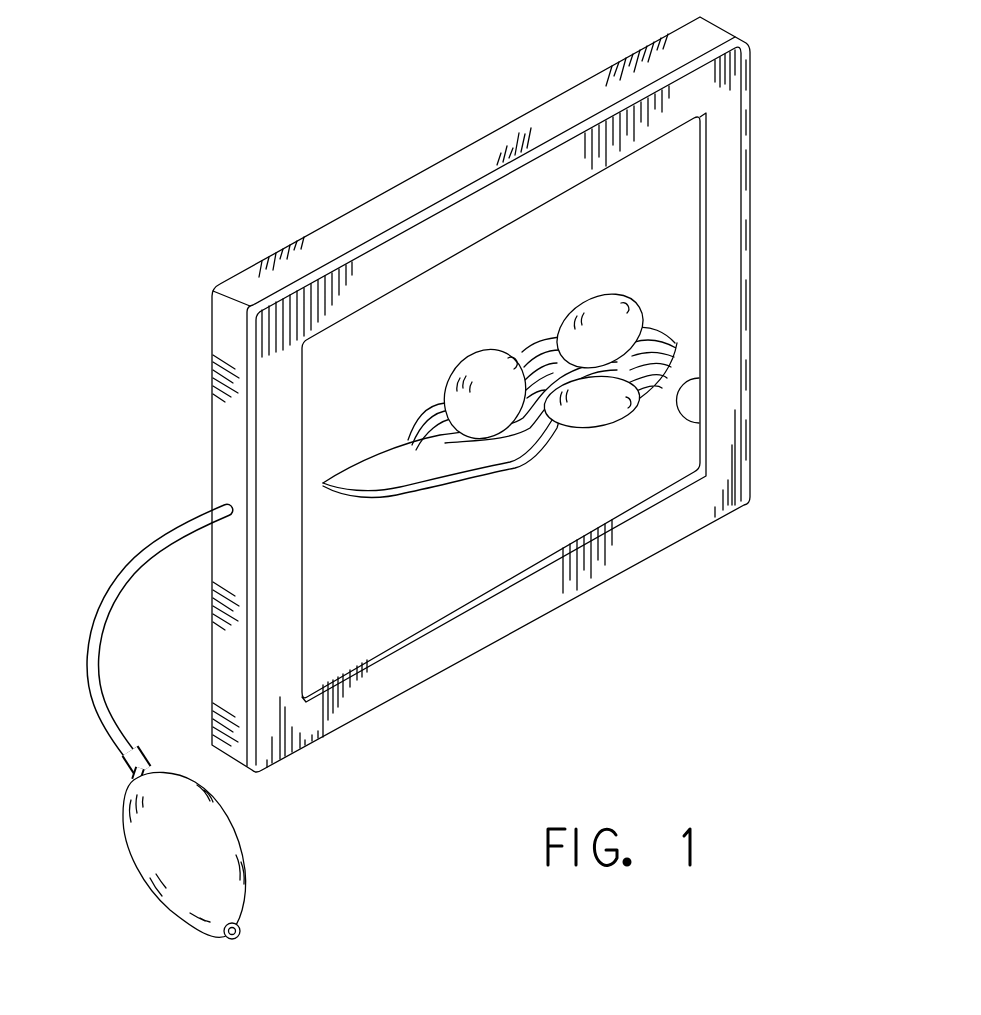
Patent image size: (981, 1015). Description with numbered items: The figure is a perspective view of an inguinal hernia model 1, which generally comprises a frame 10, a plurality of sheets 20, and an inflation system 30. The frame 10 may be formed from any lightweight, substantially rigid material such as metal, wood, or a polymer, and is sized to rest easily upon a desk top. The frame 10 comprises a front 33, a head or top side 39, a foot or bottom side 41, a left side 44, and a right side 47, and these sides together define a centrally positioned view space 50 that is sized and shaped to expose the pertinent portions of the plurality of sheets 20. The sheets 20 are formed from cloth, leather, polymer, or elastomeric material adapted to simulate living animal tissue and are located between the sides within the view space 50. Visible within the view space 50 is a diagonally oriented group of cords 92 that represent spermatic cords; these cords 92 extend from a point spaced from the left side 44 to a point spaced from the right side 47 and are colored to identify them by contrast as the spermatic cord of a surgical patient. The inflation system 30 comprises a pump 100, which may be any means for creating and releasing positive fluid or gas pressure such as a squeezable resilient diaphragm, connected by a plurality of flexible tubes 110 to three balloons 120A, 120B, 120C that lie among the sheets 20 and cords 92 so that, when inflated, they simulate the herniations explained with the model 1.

The inguinal hernia model 1 is at (290, 79).
The frame 10 is at (771, 91).
The plurality of sheets 20 is at (399, 420).
The inflation system 30 is at (104, 788).
The front 33 is at (532, 615).
The head or top side 39 is at (357, 223).
The foot or bottom side 41 is at (413, 690).
The left side 44 is at (742, 125).
The right side 47 is at (223, 412).
The centrally positioned view space 50 is at (699, 423).
The group of cords 92 is at (658, 335).
The pump 100 is at (183, 907).
The plurality of tubes 110 is at (107, 600).
The balloon 120A is at (495, 356).
The balloon 120B is at (603, 303).
The balloon 120C is at (625, 425).